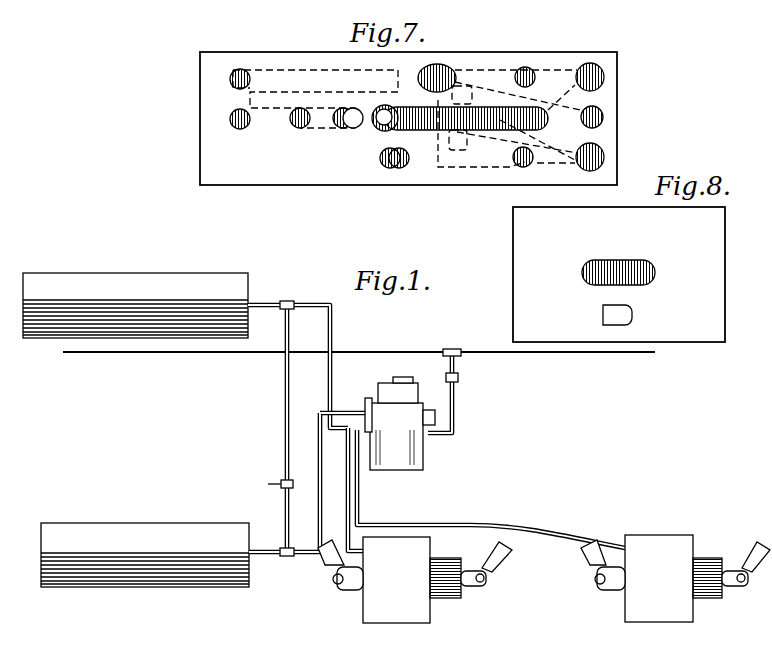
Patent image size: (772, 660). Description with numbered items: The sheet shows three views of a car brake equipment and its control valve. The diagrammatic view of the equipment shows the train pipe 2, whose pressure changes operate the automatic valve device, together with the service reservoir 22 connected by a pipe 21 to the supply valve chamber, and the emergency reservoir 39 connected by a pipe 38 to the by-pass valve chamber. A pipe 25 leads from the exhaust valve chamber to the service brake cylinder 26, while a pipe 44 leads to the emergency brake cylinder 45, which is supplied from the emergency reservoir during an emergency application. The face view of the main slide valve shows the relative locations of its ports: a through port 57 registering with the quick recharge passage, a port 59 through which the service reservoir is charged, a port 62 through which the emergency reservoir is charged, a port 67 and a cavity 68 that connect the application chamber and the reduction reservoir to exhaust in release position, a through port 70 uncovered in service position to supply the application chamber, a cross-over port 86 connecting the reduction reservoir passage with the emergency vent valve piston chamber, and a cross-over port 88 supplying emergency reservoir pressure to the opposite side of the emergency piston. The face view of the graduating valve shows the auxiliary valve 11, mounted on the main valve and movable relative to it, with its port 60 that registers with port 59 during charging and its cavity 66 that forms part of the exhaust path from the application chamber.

In FIG. 7, the cavity 68 is at (237, 72).
In FIG. 7, the cross-over port 86 is at (232, 123).
In FIG. 7, the through port 70 is at (297, 127).
In FIG. 7, the port 67 is at (380, 124).
In FIG. 7, the port 59 is at (396, 166).
In FIG. 7, the cross-over port 88 is at (590, 115).
In FIG. 7, the port 62 is at (601, 70).
In FIG. 7, the through port 57 is at (599, 154).
In FIG. 8, the auxiliary valve 11 is at (710, 265).
In FIG. 8, the cavity 66 is at (624, 270).
In FIG. 8, the port 60 is at (630, 316).
In FIG. 1, the service reservoir 22 is at (243, 284).
In FIG. 1, the emergency reservoir 39 is at (222, 528).
In FIG. 1, the train pipe 2 is at (465, 401).
In FIG. 1, the pipe 21 is at (331, 327).
In FIG. 1, the pipe 38 is at (319, 454).
In FIG. 1, the pipe 25 is at (347, 503).
In FIG. 1, the pipe 44 is at (357, 484).
In FIG. 1, the service brake cylinder 26 is at (417, 552).
In FIG. 1, the emergency brake cylinder 45 is at (660, 545).